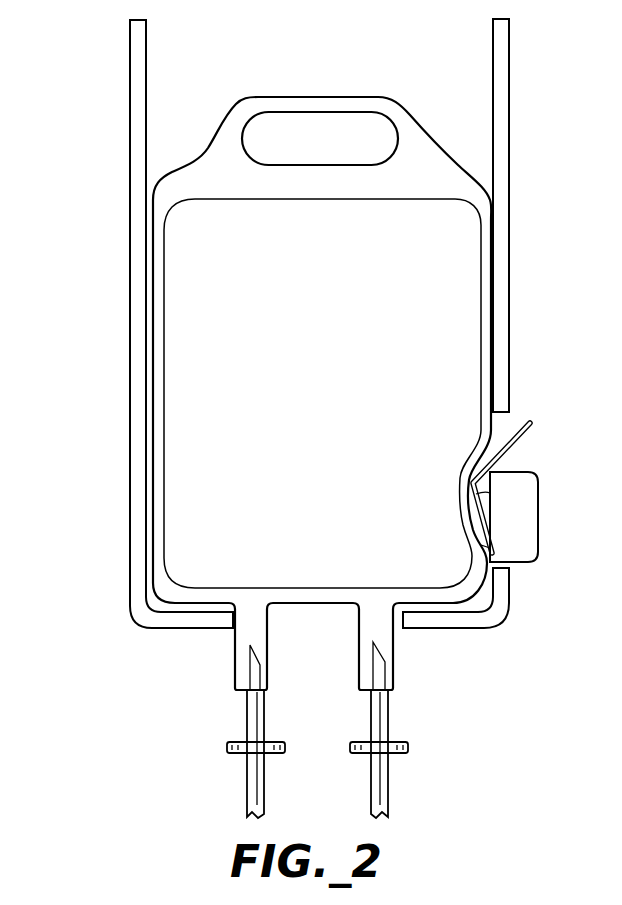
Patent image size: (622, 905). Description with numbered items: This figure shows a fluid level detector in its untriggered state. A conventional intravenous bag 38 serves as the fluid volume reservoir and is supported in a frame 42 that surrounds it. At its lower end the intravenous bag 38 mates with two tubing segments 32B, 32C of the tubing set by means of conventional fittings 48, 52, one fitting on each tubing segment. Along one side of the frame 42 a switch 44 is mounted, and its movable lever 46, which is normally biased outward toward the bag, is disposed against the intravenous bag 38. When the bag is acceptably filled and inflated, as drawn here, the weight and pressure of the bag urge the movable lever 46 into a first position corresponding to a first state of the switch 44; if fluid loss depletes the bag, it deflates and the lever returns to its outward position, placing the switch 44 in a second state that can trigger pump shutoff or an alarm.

The intravenous bag 38 is at (216, 140).
The frame 42 is at (128, 383).
The switch 44 is at (540, 492).
The movable lever 46 is at (528, 430).
The fitting 48 is at (226, 746).
The fitting 52 is at (410, 745).
The tubing segment 32B is at (246, 800).
The tubing segment 32C is at (389, 797).